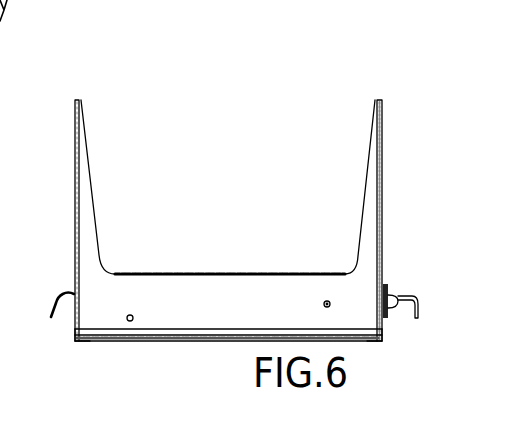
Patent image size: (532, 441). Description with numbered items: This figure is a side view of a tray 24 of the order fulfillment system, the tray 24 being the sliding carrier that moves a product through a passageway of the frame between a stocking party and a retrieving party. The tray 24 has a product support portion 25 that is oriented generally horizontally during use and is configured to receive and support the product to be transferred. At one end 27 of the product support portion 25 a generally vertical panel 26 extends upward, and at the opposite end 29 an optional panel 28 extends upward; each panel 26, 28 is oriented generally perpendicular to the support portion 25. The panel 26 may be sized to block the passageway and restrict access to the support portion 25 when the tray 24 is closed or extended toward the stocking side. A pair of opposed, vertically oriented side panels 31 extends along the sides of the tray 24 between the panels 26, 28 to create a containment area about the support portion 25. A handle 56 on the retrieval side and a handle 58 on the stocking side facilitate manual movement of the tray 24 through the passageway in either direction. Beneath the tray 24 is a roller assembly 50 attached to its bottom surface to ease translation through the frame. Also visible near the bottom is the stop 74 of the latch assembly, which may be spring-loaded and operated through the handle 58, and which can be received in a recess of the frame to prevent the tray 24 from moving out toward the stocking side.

The tray 24 is at (283, 80).
The product support portion 25 is at (188, 302).
The panel 26 is at (77, 143).
The end 27 is at (93, 317).
The panel 28 is at (379, 123).
The end 29 is at (369, 317).
The side panel 31 is at (262, 287).
The roller assembly 50 is at (142, 336).
The handle 56 is at (48, 310).
The handle 58 is at (420, 297).
The stop 74 is at (364, 345).